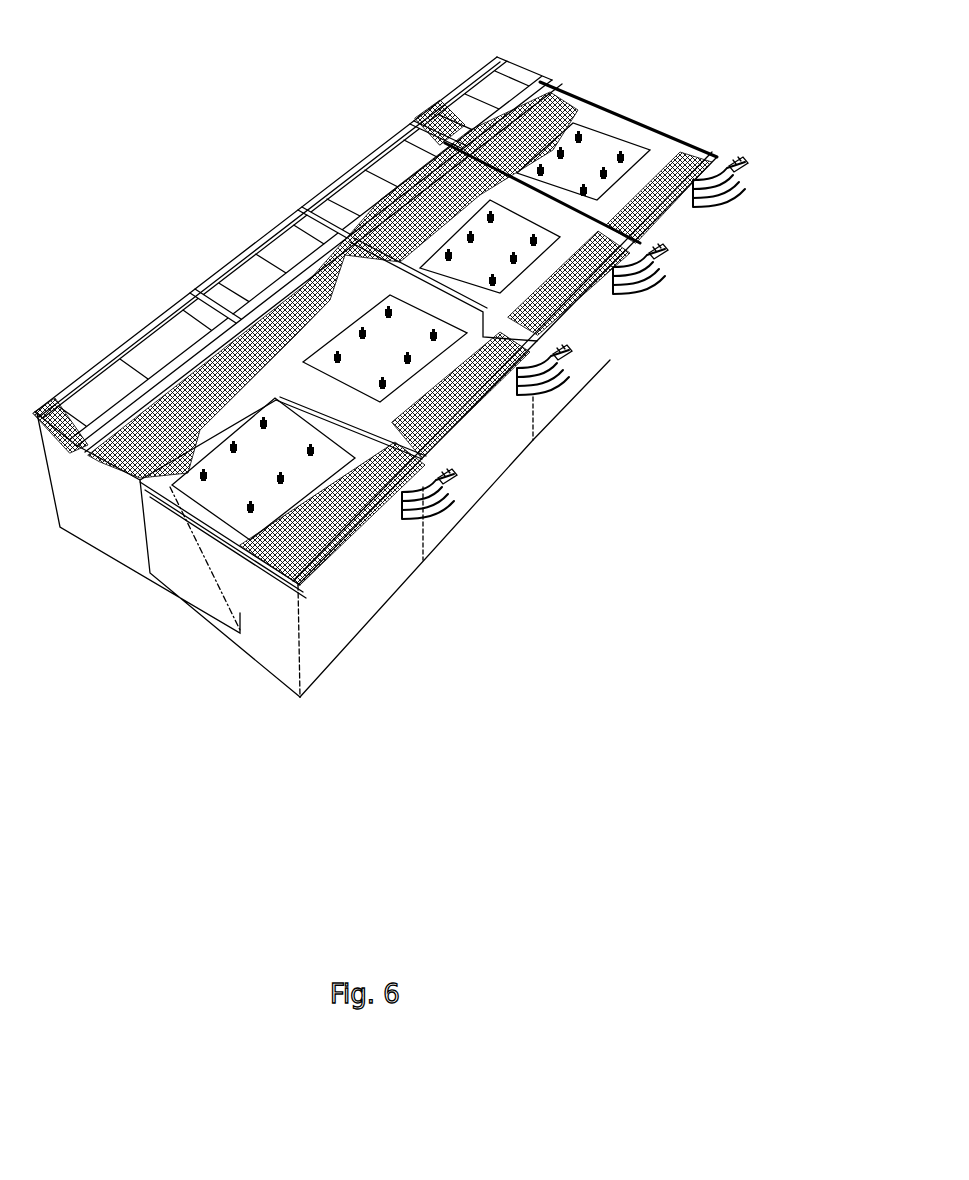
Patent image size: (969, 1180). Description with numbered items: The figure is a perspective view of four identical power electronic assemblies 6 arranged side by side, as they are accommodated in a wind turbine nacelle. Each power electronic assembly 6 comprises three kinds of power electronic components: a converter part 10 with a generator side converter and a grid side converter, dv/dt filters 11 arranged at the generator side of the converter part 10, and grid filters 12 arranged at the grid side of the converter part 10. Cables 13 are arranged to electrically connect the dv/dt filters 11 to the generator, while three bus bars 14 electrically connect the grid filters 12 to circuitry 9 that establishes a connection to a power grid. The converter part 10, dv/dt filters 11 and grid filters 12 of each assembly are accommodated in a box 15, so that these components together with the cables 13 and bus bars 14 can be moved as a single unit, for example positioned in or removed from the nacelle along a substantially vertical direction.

The power electronic assembly 6 is at (125, 332).
The circuitry 9 is at (567, 160).
The converter part 10 is at (240, 467).
The dv/dt filters 11 is at (588, 288).
The grid filters 12 is at (158, 484).
The cables 13 is at (653, 287).
The bus bars 14 is at (450, 95).
The box 15 is at (500, 448).